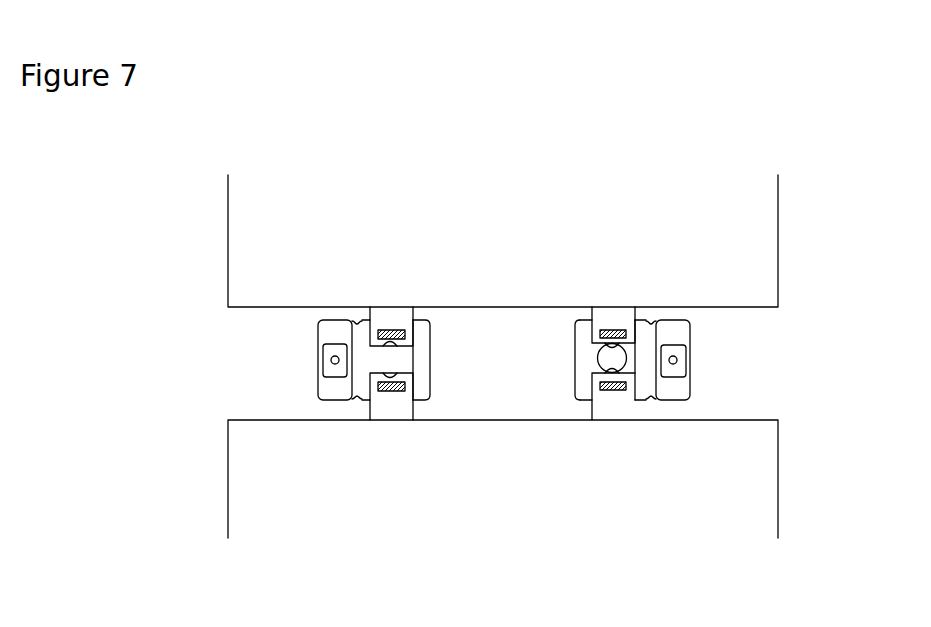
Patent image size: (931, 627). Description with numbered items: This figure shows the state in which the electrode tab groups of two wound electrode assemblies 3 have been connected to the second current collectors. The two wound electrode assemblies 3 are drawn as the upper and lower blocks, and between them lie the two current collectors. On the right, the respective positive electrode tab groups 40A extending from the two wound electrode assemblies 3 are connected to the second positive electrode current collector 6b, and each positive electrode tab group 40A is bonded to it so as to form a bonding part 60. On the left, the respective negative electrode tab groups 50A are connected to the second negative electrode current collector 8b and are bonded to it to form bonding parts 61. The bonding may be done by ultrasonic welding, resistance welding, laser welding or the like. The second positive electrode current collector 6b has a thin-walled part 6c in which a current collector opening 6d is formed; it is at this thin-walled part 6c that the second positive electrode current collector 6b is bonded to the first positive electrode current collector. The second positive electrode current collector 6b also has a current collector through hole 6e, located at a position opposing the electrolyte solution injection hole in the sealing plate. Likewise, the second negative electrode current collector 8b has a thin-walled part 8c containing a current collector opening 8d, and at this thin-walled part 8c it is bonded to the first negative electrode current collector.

The wound electrode assembly 3 is at (740, 267).
The negative electrode tab group 50A is at (389, 315).
The positive electrode tab group 40A is at (613, 315).
The bonding part 61 is at (404, 330).
The bonding part 60 is at (599, 328).
The second negative electrode current collector 8b is at (336, 331).
The thin-walled part 8c is at (330, 363).
The current collector opening 8d is at (332, 360).
The current collector through hole 6e is at (598, 355).
The second positive electrode current collector 6b is at (675, 331).
The thin-walled part 6c is at (674, 363).
The current collector opening 6d is at (678, 358).